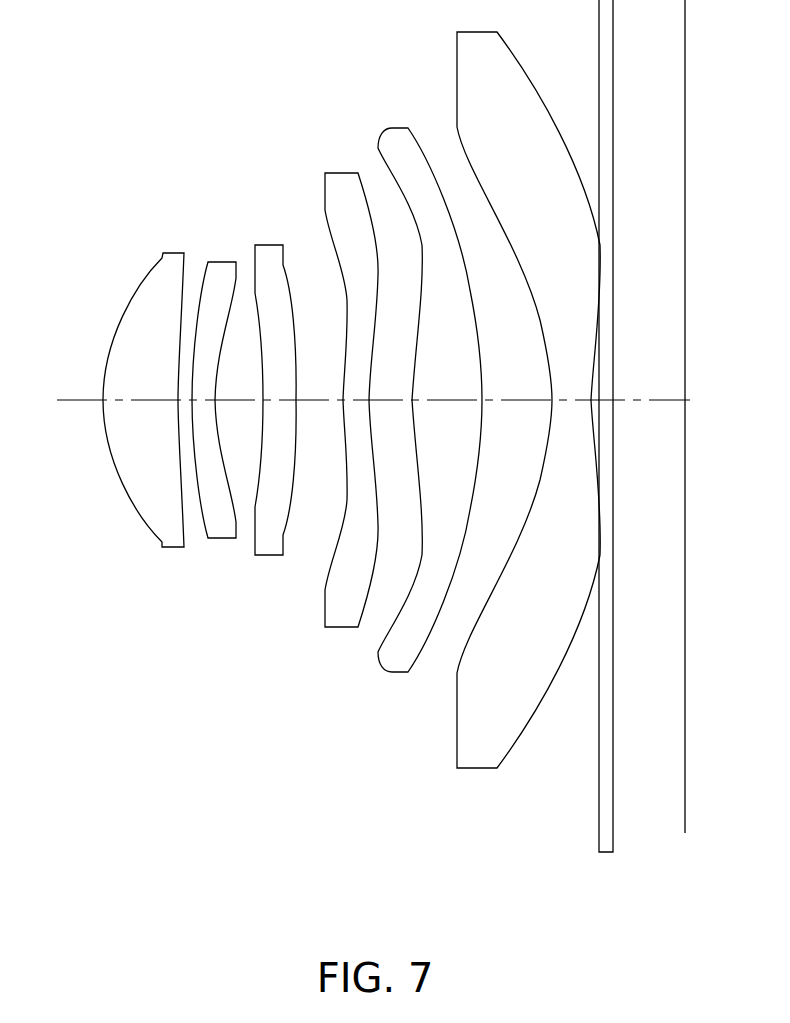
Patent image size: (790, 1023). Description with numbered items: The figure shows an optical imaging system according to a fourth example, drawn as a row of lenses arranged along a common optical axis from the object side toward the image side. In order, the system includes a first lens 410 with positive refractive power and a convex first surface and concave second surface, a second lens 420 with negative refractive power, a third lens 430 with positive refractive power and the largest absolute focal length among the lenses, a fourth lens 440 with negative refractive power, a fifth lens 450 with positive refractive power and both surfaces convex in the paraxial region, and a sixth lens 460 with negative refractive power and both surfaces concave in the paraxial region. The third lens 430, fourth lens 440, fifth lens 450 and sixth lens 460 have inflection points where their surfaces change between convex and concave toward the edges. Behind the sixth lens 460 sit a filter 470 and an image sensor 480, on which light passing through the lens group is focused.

The first lens 410 is at (176, 548).
The second lens 420 is at (225, 540).
The third lens 430 is at (268, 556).
The fourth lens 440 is at (346, 628).
The fifth lens 450 is at (405, 674).
The sixth lens 460 is at (476, 770).
The filter 470 is at (605, 853).
The image sensor 480 is at (685, 805).